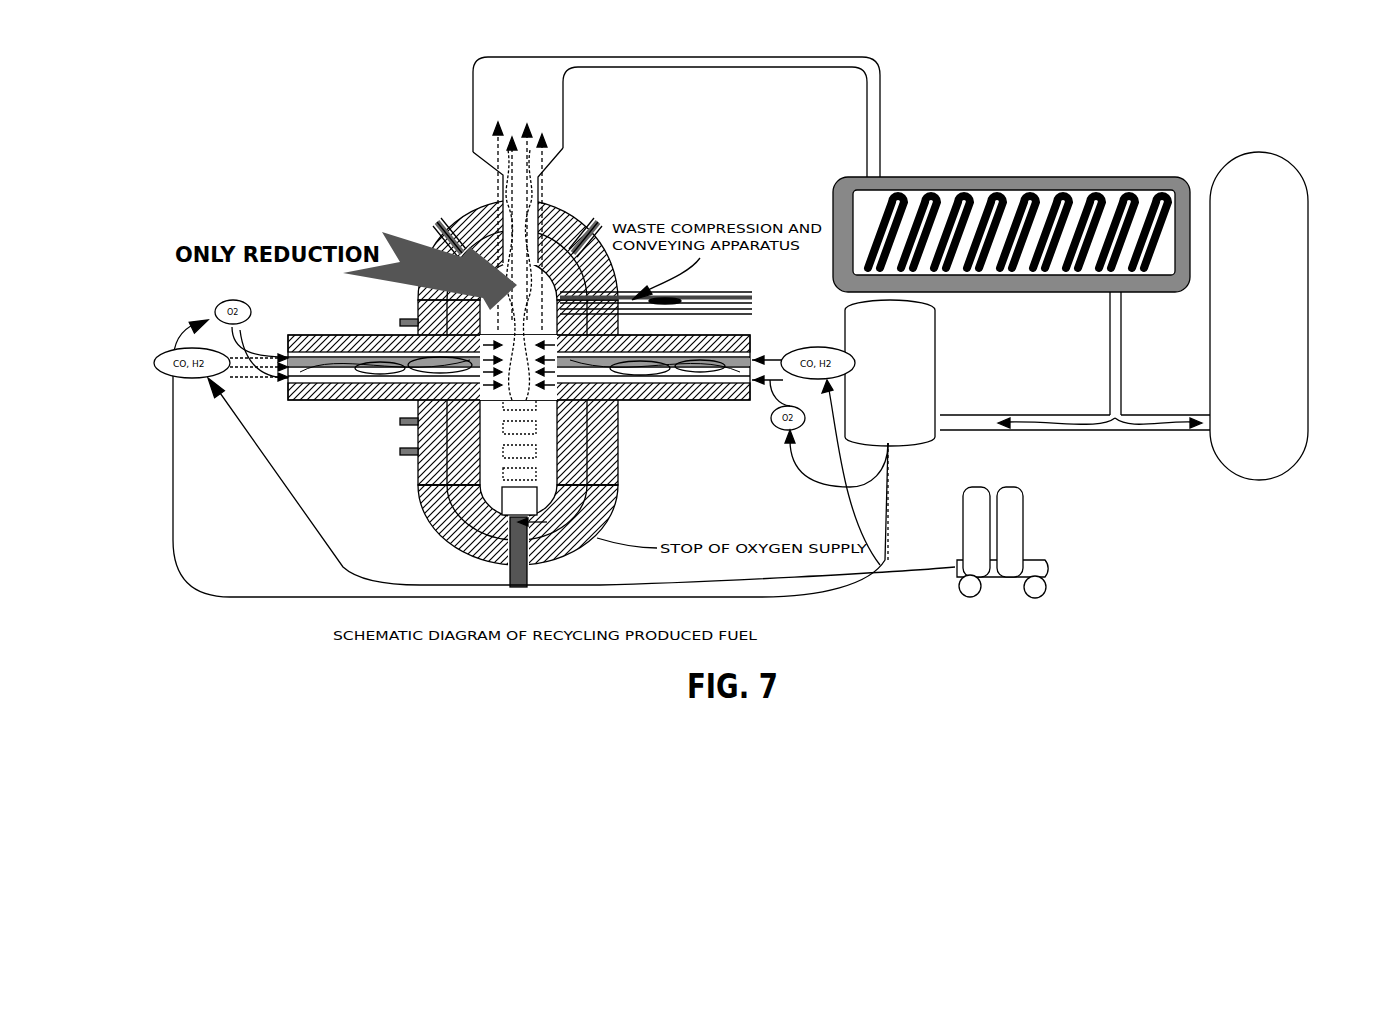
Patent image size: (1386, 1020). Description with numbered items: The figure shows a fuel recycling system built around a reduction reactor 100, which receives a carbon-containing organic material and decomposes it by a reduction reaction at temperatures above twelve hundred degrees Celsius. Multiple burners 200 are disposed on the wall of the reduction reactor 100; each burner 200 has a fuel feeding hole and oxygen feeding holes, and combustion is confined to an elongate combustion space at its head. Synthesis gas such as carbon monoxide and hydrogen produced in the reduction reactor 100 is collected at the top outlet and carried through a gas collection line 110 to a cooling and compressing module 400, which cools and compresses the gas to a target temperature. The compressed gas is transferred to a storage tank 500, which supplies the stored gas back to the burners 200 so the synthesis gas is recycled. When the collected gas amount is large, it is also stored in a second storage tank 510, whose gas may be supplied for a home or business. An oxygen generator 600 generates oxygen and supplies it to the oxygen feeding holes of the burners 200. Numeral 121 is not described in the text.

The reduction reactor 100 is at (417, 467).
The gas collection line 110 is at (503, 211).
The discharge pipe 121 is at (720, 69).
The burner 200 is at (361, 392).
The cooling and compressing module 400 is at (1108, 172).
The storage tank 500 is at (926, 384).
The second storage tank 510 is at (1280, 236).
The oxygen generator 600 is at (1020, 489).